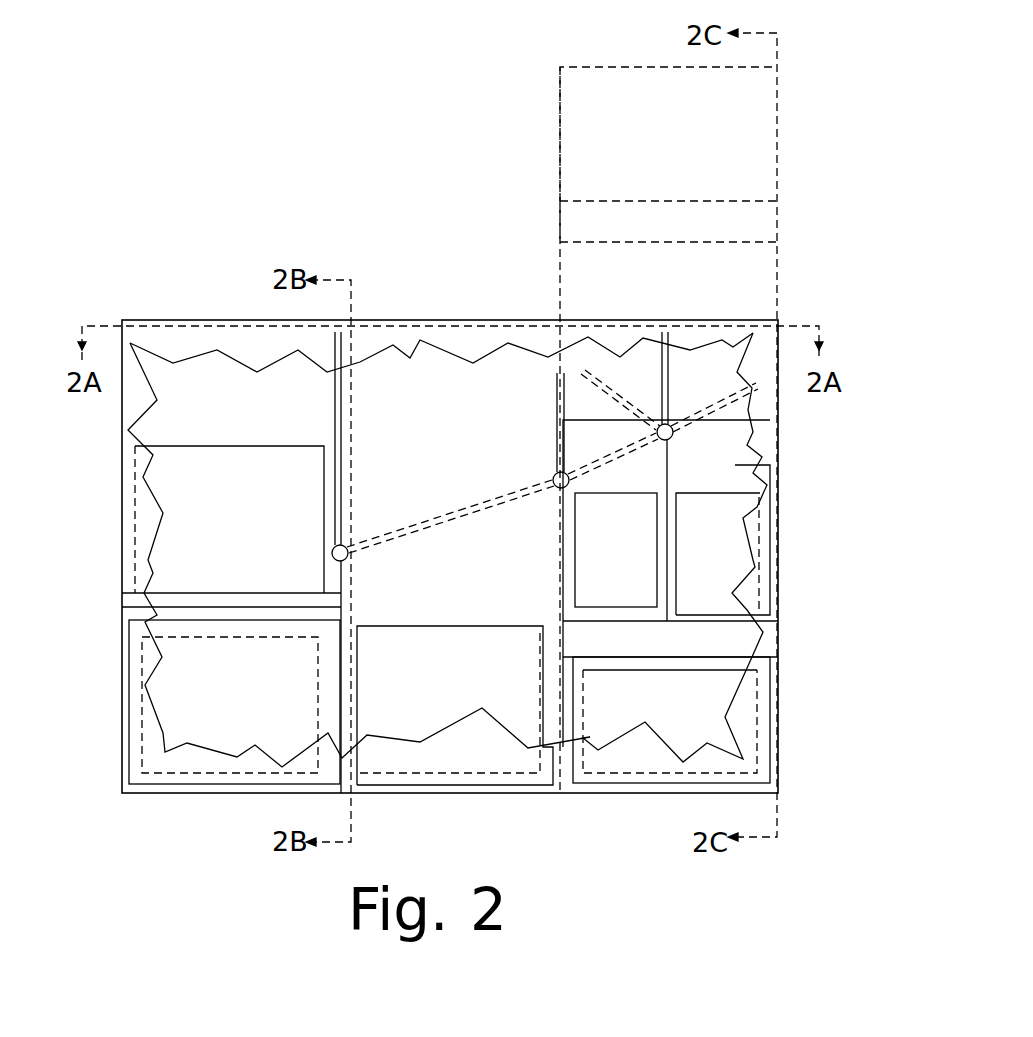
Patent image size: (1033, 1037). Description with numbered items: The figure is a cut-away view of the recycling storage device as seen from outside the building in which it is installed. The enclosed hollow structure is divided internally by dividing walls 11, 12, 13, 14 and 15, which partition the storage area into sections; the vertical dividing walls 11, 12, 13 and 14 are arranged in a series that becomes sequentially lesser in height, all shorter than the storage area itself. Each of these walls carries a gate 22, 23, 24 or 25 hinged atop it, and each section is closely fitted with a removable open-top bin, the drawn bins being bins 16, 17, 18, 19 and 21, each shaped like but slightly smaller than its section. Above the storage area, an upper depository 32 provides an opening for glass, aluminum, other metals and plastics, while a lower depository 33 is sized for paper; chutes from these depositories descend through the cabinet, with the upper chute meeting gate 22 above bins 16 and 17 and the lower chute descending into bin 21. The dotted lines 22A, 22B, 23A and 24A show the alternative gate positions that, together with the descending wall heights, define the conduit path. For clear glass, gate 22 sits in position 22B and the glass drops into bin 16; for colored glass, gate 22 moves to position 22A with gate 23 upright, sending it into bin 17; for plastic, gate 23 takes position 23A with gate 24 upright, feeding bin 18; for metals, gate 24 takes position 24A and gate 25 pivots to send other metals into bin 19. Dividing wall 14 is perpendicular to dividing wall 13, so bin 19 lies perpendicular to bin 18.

The dividing wall 11 is at (668, 462).
The dividing wall 12 is at (563, 583).
The dividing wall 13 is at (342, 620).
The dividing wall 14 is at (205, 625).
The dividing wall 15 is at (633, 622).
The bin 16 is at (717, 548).
The bin 17 is at (612, 528).
The bin 18 is at (478, 673).
The bin 19 is at (215, 697).
The bin 21 is at (680, 708).
The gate 22 is at (670, 377).
The gate position 22A is at (722, 407).
The gate position 22B is at (593, 380).
The gate 23 is at (560, 402).
The gate position 23A is at (636, 452).
The gate 24 is at (342, 398).
The gate position 24A is at (460, 508).
The gate 25 is at (237, 512).
The upper depository 32 is at (675, 127).
The lower depository 33 is at (682, 221).